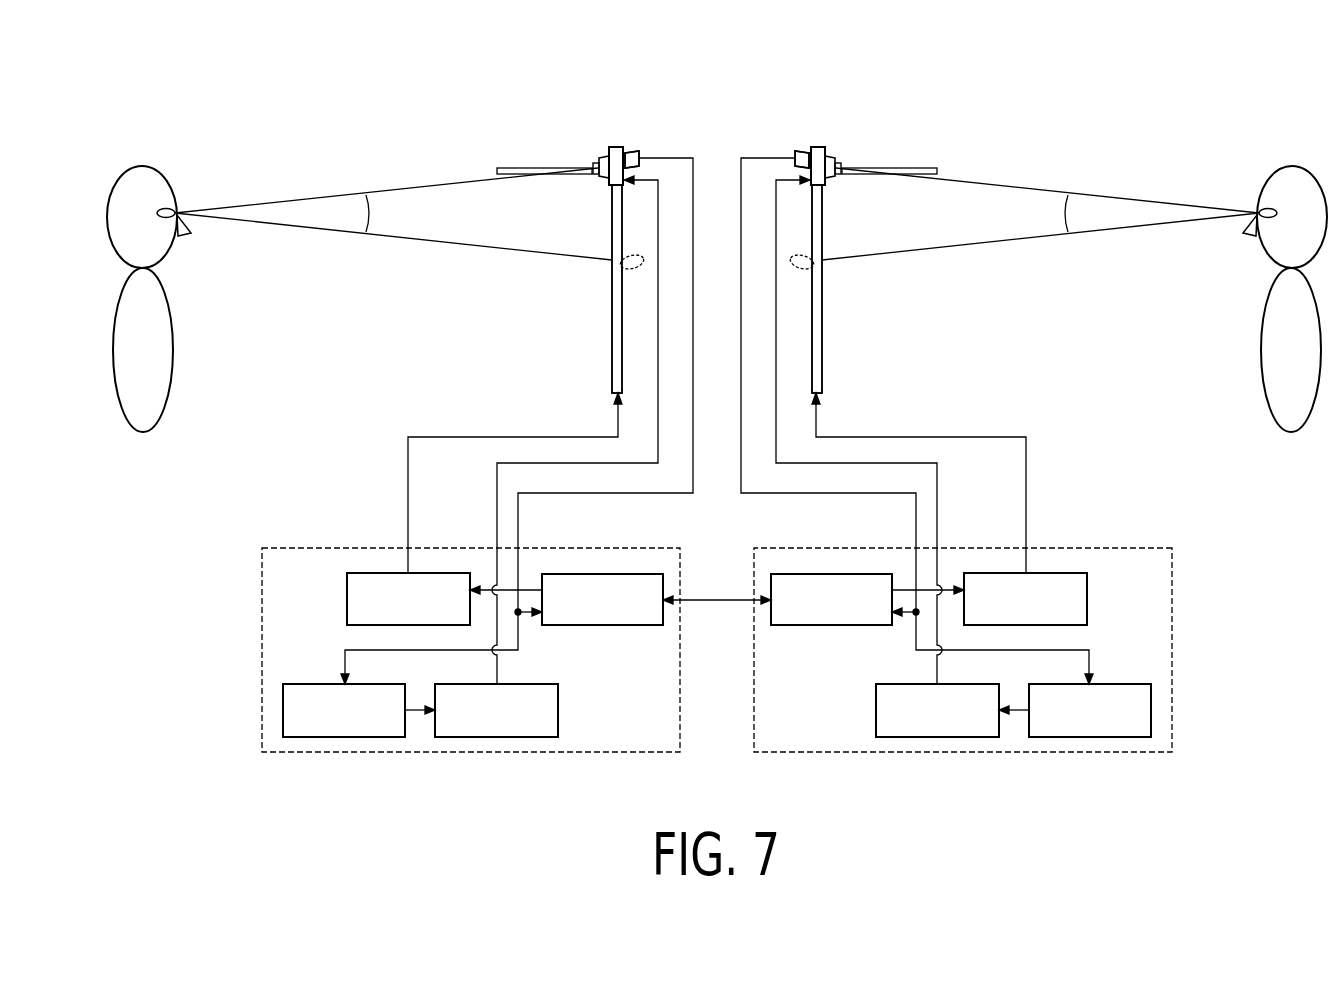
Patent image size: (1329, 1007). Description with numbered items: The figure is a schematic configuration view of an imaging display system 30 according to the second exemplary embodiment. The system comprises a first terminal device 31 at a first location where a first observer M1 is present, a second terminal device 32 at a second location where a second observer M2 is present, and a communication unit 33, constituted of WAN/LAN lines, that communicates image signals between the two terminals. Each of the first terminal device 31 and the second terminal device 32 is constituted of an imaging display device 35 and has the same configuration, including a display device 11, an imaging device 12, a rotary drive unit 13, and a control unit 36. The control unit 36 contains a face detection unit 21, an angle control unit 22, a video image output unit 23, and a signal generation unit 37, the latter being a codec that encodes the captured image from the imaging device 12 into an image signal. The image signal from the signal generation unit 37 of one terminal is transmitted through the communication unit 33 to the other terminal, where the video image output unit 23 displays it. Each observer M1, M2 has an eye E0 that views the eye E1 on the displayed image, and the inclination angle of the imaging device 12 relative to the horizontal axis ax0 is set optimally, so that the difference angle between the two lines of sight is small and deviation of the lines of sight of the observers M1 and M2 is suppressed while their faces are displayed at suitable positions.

The display device 11 is at (716, 289).
The imaging device 12 is at (716, 133).
The rotary drive unit 13 is at (717, 137).
The face detection unit 21 is at (717, 744).
The angle control unit 22 is at (717, 744).
The video image output unit 23 is at (716, 567).
The imaging display system 30 is at (713, 104).
The first terminal device 31 is at (648, 58).
The second terminal device 32 is at (867, 58).
The communication unit 33 is at (716, 598).
The imaging display device 35 is at (735, 212).
The control unit 36 is at (716, 455).
The signal generation unit 37 is at (717, 567).
The first observer M1 is at (149, 263).
The second observer M2 is at (1285, 263).
The eye of the observer E0 is at (717, 183).
The eye on the image E1 is at (716, 277).
The horizontal axis ax0 is at (717, 132).